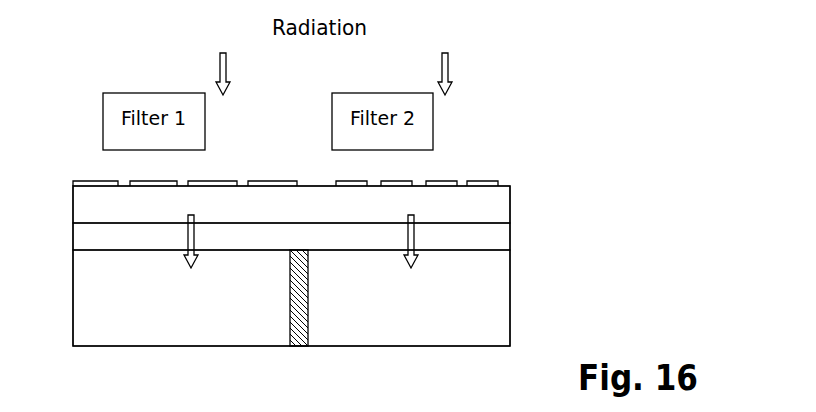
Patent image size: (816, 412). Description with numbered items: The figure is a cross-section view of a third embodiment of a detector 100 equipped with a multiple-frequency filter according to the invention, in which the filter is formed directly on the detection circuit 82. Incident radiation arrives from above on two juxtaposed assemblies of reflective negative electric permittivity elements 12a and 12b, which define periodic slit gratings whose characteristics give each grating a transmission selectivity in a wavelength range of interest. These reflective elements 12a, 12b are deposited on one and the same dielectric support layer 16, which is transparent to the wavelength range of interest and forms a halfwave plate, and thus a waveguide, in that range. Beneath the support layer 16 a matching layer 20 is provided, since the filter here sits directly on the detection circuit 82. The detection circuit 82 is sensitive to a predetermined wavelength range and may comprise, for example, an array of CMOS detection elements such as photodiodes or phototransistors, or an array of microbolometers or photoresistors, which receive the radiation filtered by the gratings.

The detector 100 is at (33, 157).
The reflective elements 12a is at (266, 181).
The reflective elements 12b is at (483, 181).
The dielectric support layer 16 is at (510, 208).
The matching layer 20 is at (510, 237).
The detection circuit 82 is at (510, 298).